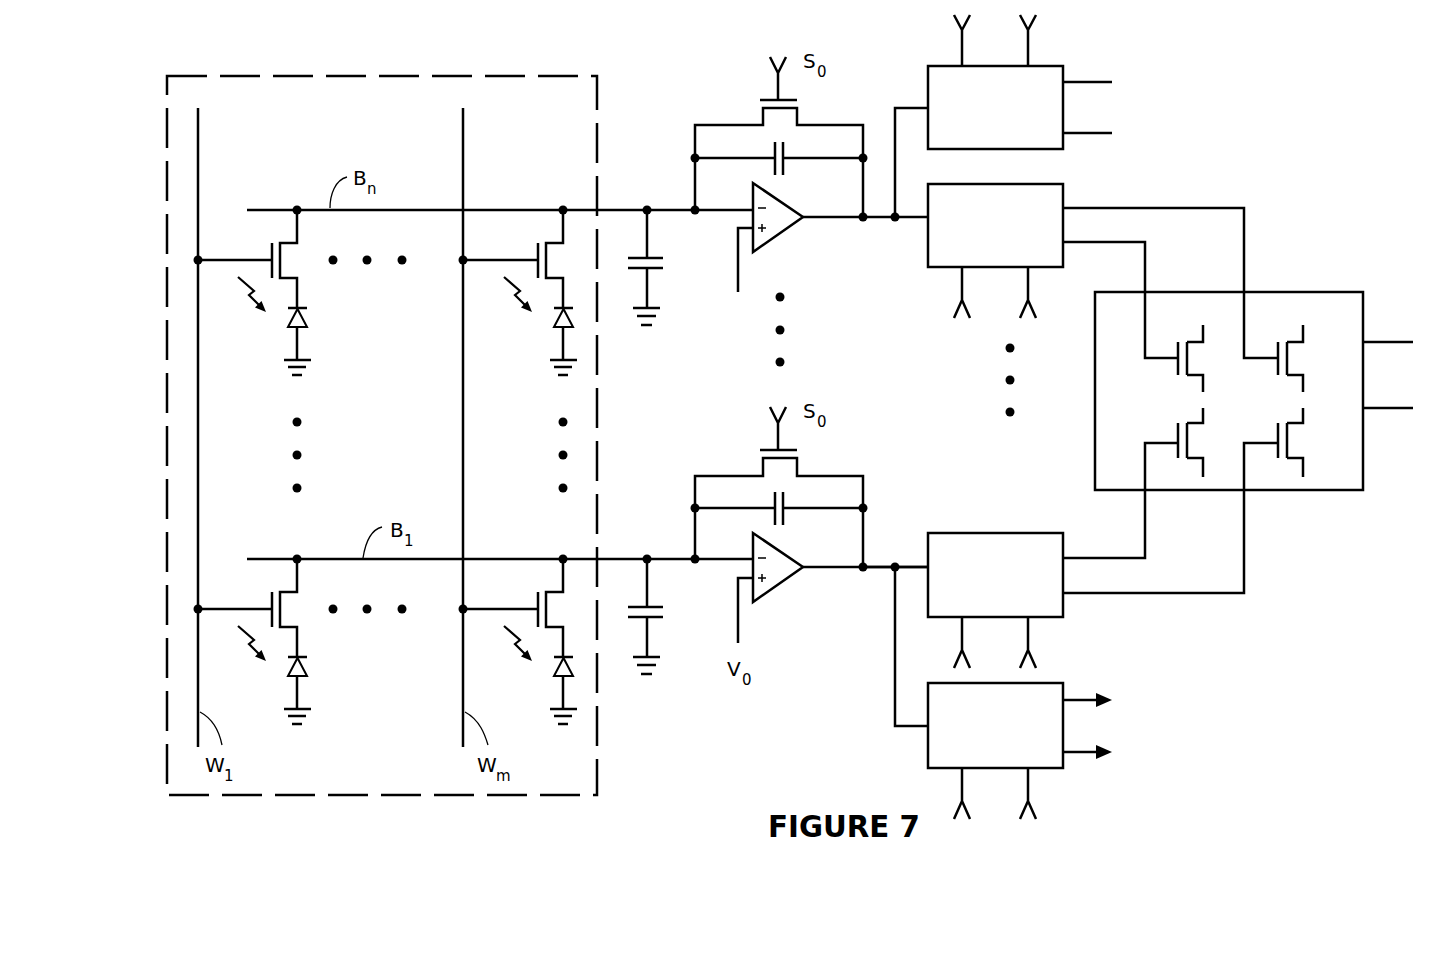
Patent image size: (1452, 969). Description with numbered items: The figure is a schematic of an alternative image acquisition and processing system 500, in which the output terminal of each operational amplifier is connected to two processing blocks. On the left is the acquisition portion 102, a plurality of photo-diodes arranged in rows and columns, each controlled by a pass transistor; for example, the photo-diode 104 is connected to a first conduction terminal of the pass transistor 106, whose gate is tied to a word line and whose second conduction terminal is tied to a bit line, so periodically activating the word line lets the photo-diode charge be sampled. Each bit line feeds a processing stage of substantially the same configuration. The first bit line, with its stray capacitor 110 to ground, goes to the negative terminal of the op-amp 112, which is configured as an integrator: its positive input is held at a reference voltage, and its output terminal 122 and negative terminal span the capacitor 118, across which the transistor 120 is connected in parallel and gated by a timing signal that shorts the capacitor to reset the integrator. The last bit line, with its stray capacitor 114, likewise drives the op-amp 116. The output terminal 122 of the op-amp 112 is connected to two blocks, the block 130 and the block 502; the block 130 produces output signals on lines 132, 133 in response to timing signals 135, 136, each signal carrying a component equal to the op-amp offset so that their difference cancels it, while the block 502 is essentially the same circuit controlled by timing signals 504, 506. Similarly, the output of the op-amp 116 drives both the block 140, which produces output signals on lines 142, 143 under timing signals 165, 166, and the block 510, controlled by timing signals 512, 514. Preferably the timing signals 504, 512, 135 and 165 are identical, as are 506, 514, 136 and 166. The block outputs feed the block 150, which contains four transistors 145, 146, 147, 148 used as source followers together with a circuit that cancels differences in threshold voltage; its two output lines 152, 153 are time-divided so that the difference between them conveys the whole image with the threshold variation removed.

The acquisition portion 102 is at (597, 707).
The photo-diode 104 is at (305, 670).
The pass transistor 106 is at (300, 578).
The capacitor 110 is at (653, 620).
The operational amplifier 112 is at (770, 590).
The stray capacitor 114 is at (653, 258).
The operational amplifier 116 is at (777, 237).
The capacitor 118 is at (785, 513).
The transistor 120 is at (757, 468).
The output terminal 122 is at (867, 578).
The block 130 is at (977, 532).
The output line 132 is at (1143, 593).
The output line 133 is at (1147, 523).
The timing signal 135 is at (968, 623).
The timing signal 136 is at (1032, 625).
The block 140 is at (1005, 183).
The output line 142 is at (1148, 268).
The output line 143 is at (1247, 242).
The transistor 145 is at (1310, 413).
The transistor 146 is at (1210, 413).
The transistor 147 is at (1207, 375).
The transistor 148 is at (1305, 385).
The block 150 is at (1297, 492).
The output line 152 is at (1377, 410).
The output line 153 is at (1377, 333).
The timing signal 165 is at (968, 273).
The timing signal 166 is at (1032, 282).
The system 500 is at (1236, 699).
The block 502 is at (1063, 733).
The timing signal 504 is at (968, 773).
The timing signal 506 is at (1032, 780).
The block 510 is at (1045, 150).
The timing signal 512 is at (968, 53).
The timing signal 514 is at (1032, 47).